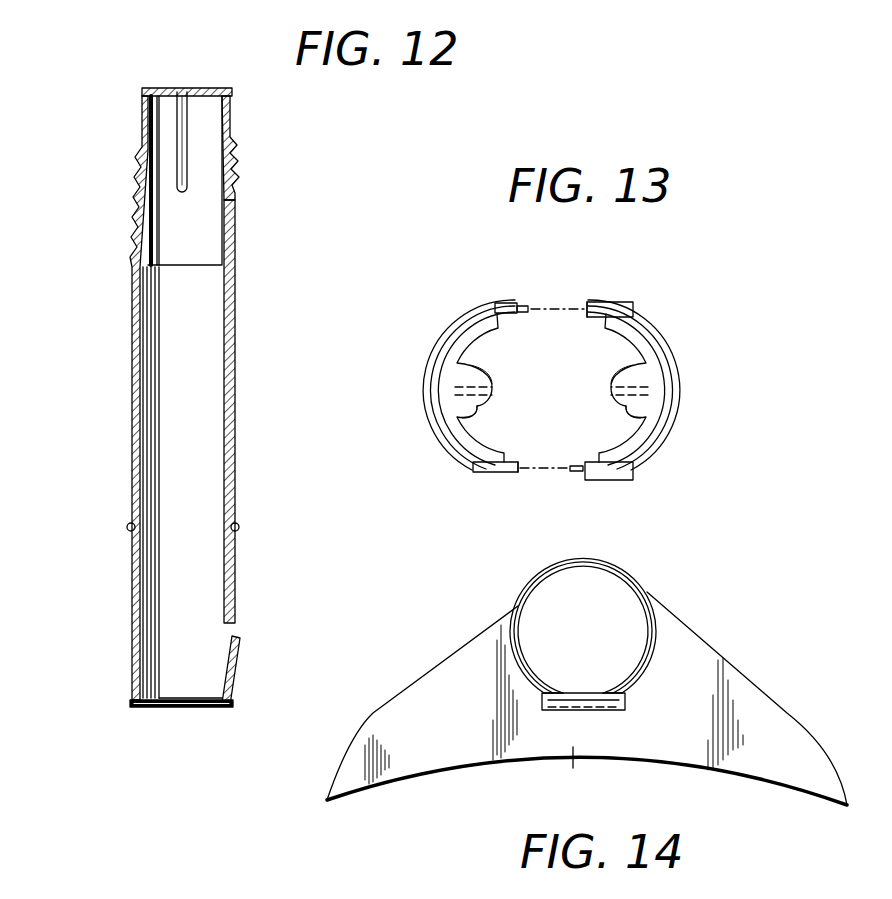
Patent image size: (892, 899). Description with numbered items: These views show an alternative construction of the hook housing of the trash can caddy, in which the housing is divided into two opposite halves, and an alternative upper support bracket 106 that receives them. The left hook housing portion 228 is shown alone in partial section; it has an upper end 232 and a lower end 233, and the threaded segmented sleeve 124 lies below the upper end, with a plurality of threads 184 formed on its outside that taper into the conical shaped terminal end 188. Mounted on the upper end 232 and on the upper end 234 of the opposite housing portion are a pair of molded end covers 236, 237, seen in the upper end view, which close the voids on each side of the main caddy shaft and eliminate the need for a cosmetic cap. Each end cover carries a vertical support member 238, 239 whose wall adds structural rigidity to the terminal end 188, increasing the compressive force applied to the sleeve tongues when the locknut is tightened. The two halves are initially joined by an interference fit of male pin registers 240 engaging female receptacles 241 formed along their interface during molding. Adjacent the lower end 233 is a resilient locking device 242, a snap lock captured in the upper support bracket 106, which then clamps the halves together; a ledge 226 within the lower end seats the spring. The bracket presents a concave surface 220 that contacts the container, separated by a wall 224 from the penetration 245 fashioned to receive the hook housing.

In FIG. 14, the upper support bracket 106 is at (716, 621).
In FIG. 12, the threaded segmented sleeve 124 is at (202, 222).
In FIG. 12, the threads 184 is at (236, 177).
In FIG. 12, the conical shaped terminal end 188 is at (143, 136).
In FIG. 14, the concave surface 220 is at (433, 774).
In FIG. 14, the wall 224 is at (573, 768).
In FIG. 12, the ledge 226 is at (218, 699).
In FIG. 12, the left hook housing portion 228 is at (235, 385).
In FIG. 12, the upper end 232 is at (220, 89).
In FIG. 13, the upper end 232 is at (455, 326).
In FIG. 12, the lower end 233 is at (165, 706).
In FIG. 13, the upper end 234 is at (651, 322).
In FIG. 12, the end cover 236 is at (170, 88).
In FIG. 13, the end cover 236 is at (493, 381).
In FIG. 13, the end cover 237 is at (626, 407).
In FIG. 12, the vertical support member 238 is at (184, 133).
In FIG. 13, the vertical support member 238 is at (478, 412).
In FIG. 13, the vertical support member 239 is at (622, 366).
In FIG. 12, the male pin register 240 is at (237, 524).
In FIG. 13, the male pin register 240 is at (523, 305).
In FIG. 12, the female receptacle 241 is at (129, 524).
In FIG. 13, the female receptacle 241 is at (591, 302).
In FIG. 12, the resilient locking device 242 is at (238, 668).
In FIG. 14, the penetration 245 is at (537, 607).